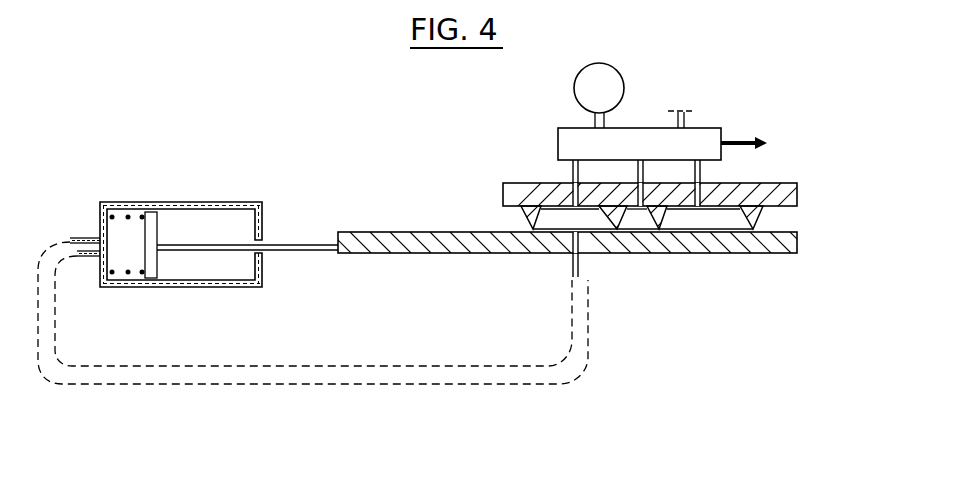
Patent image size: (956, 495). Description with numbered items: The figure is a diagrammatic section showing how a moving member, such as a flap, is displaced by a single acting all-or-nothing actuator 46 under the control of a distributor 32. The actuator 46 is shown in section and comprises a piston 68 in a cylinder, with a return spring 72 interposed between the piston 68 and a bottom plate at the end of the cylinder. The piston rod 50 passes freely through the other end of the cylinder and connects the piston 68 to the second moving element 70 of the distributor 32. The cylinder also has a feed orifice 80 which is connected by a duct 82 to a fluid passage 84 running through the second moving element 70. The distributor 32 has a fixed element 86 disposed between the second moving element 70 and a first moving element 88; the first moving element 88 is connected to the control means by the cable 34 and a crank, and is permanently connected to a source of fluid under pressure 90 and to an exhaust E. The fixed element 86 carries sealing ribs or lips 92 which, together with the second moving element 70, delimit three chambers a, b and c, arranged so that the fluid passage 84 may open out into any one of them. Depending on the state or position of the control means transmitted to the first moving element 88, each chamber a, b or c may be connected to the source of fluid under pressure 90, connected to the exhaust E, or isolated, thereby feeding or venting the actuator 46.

The distributor 32 is at (508, 150).
The cable 34 is at (731, 143).
The actuator 46 is at (213, 196).
The piston rod 50 is at (306, 244).
The piston 68 is at (152, 260).
The second moving element 70 is at (383, 232).
The return spring 72 is at (128, 213).
The feed orifice 80 is at (86, 236).
The duct 82 is at (343, 368).
The fluid passage 84 is at (572, 257).
The fixed element 86 is at (503, 192).
The first moving element 88 is at (560, 128).
The source of fluid under pressure 90 is at (604, 80).
The sealing ribs or lips 92 is at (534, 226).
The exhaust E is at (680, 111).
The chamber a is at (553, 221).
The chamber b is at (641, 220).
The chamber c is at (720, 220).